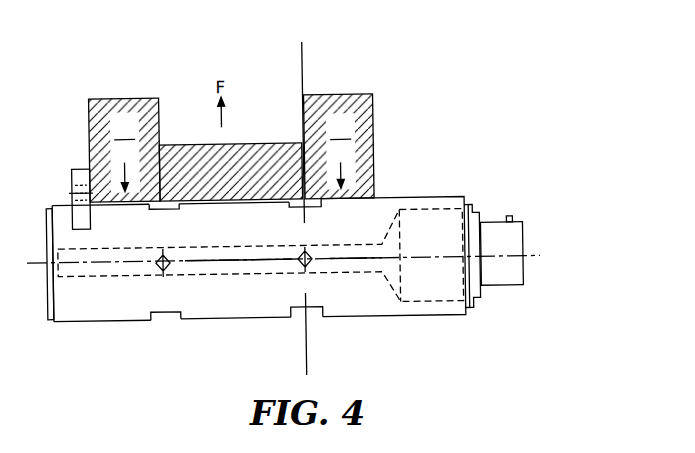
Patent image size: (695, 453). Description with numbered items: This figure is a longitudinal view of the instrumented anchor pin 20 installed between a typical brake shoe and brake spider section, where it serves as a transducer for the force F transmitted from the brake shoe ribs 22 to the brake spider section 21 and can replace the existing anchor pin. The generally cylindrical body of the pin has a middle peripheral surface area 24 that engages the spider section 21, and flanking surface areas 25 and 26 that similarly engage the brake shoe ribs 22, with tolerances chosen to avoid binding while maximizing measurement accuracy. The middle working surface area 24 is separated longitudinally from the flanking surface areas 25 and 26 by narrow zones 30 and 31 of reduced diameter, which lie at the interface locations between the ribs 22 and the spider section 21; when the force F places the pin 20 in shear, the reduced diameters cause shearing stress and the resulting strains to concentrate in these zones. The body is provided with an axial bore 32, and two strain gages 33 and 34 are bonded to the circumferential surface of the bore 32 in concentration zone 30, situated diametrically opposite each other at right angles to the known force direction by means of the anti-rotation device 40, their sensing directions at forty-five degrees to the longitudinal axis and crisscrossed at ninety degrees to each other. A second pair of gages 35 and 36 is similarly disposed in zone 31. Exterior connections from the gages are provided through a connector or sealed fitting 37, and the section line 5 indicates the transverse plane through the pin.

The section line 5- 5 is at (304, 60).
The instrumented anchor pin 20 is at (49, 321).
The brake spider section 21 is at (247, 143).
The brake shoe rib 22 is at (142, 96).
The middle peripheral surface area 24 is at (231, 203).
The flanking surface area 25 is at (106, 200).
The flanking surface area 26 is at (343, 200).
The zone of reduced diameter 30 is at (316, 300).
The zone of reduced diameter 31 is at (172, 300).
The axial bore 32 is at (363, 274).
The strain gage 33 is at (269, 301).
The strain gage 34 is at (295, 262).
The strain gage 35 is at (129, 303).
The strain gage 36 is at (158, 262).
The connector or sealed fitting 37 is at (518, 226).
The anti-rotation device 40 is at (80, 164).